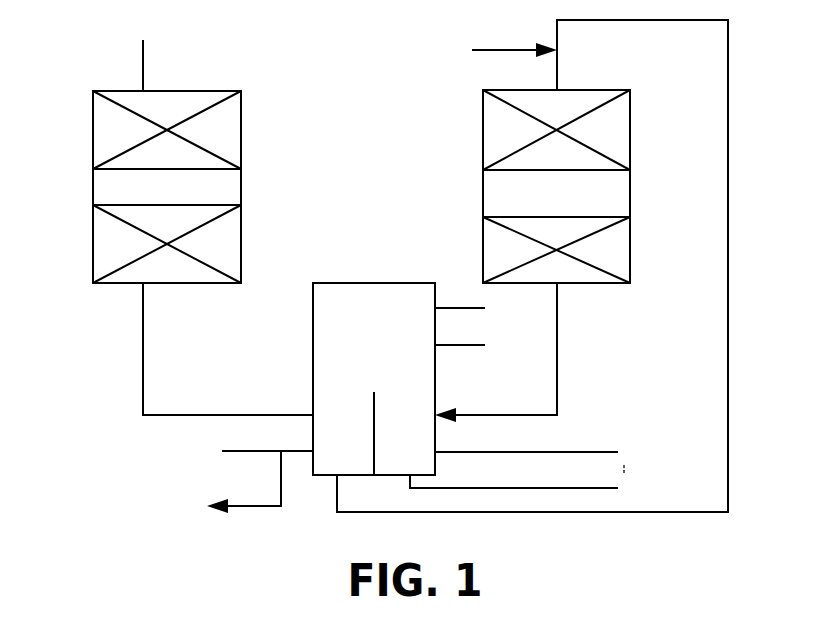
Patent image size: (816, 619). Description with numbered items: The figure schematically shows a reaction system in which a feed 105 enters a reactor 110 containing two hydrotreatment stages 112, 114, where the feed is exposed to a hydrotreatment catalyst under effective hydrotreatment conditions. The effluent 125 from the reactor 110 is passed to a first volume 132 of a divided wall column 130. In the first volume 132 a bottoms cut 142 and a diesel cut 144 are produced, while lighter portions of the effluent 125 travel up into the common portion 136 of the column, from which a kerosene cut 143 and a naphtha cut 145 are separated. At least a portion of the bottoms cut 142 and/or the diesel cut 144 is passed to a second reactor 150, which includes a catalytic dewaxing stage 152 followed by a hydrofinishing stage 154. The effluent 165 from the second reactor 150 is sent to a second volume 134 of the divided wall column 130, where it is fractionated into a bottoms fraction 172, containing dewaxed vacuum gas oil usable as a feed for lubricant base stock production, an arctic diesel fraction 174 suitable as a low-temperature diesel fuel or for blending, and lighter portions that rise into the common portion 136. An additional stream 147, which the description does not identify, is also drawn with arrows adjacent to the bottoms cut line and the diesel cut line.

The feed 105 is at (143, 72).
The reactor 110 is at (168, 187).
The hydrotreatment stage 112 is at (241, 130).
The hydrotreatment stage 114 is at (241, 252).
The effluent 125 is at (143, 323).
The divided wall column 130 is at (374, 350).
The first volume 132 is at (322, 438).
The second volume 134 is at (389, 438).
The common portion 136 is at (357, 341).
The kerosene cut 143 is at (460, 332).
The naphtha cut 145 is at (460, 295).
The diesel cut 144 is at (267, 438).
The hydrogen stream 147 is at (364, 267).
The second reactor 150 is at (556, 186).
The catalytic dewaxing stage 152 is at (630, 135).
The hydrofinishing stage 154 is at (630, 250).
The effluent 165 is at (557, 355).
The bottoms cut 142 is at (728, 497).
The bottoms fraction 172 is at (531, 483).
The arctic diesel fraction 174 is at (543, 452).